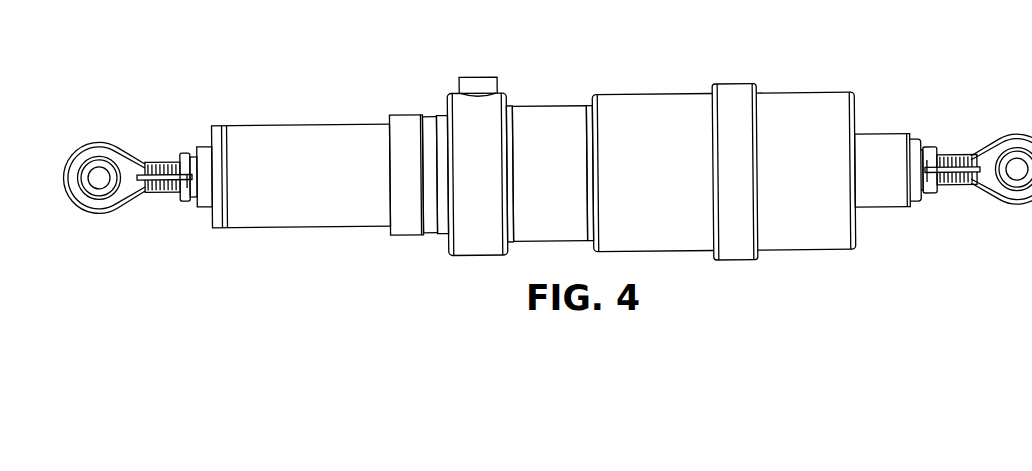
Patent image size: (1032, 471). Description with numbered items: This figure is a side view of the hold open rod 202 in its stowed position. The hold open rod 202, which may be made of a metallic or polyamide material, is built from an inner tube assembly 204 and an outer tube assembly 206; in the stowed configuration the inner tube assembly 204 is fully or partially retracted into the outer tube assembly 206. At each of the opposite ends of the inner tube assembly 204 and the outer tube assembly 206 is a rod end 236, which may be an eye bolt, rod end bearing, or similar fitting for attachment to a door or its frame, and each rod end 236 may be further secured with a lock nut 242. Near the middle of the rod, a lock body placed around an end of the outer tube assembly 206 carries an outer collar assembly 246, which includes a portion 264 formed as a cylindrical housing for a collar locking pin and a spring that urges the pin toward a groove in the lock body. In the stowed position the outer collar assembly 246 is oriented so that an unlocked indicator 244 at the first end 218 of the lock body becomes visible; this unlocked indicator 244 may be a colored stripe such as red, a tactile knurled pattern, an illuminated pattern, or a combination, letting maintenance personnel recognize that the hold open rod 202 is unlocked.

The hold open rod 202 is at (674, 281).
The inner tube assembly 204 is at (887, 197).
The outer tube assembly 206 is at (305, 225).
The first end 218 is at (421, 41).
The rod ends 236 is at (98, 177).
The lock nut 242 is at (187, 155).
The unlocked indicator 244 is at (428, 127).
The outer collar assembly 246 is at (733, 95).
The portion of outer collar assembly 264 is at (483, 85).